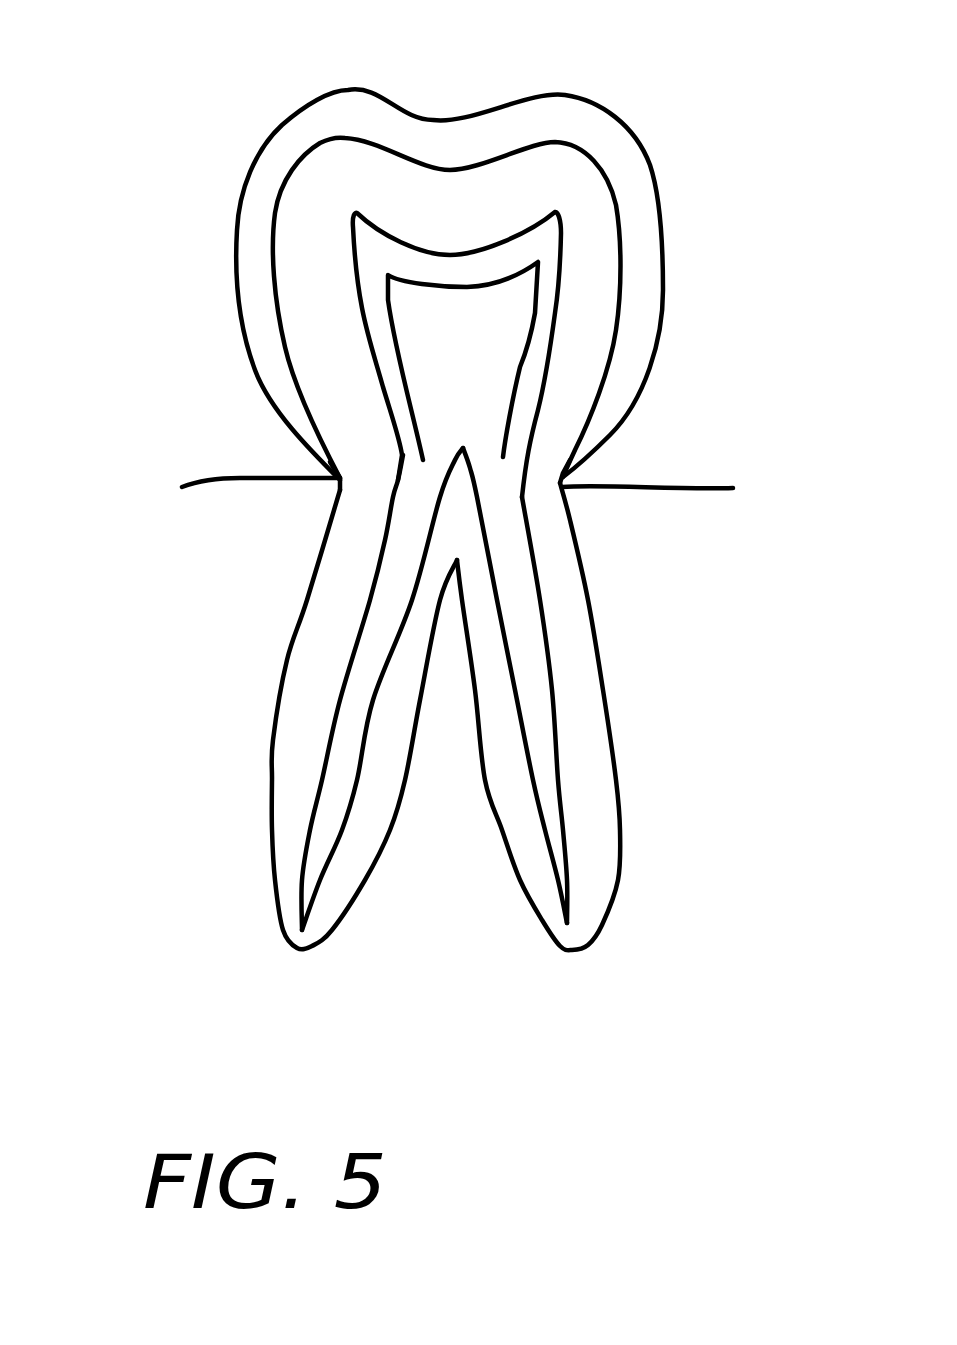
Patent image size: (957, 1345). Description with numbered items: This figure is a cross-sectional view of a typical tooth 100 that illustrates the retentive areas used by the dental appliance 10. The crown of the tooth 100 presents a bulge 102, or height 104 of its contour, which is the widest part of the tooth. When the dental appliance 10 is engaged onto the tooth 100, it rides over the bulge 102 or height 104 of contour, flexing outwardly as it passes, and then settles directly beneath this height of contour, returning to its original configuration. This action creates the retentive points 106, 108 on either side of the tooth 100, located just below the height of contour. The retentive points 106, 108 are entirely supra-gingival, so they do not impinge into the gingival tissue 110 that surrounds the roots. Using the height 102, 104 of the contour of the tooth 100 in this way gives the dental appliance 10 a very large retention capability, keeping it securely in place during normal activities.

The dental appliance 10 is at (662, 82).
The tooth 100 is at (578, 558).
The bulge 102 is at (277, 317).
The height of contour 104 is at (618, 307).
The retentive point 106 is at (315, 465).
The retentive point 108 is at (592, 462).
The gingival tissue 110 is at (213, 480).